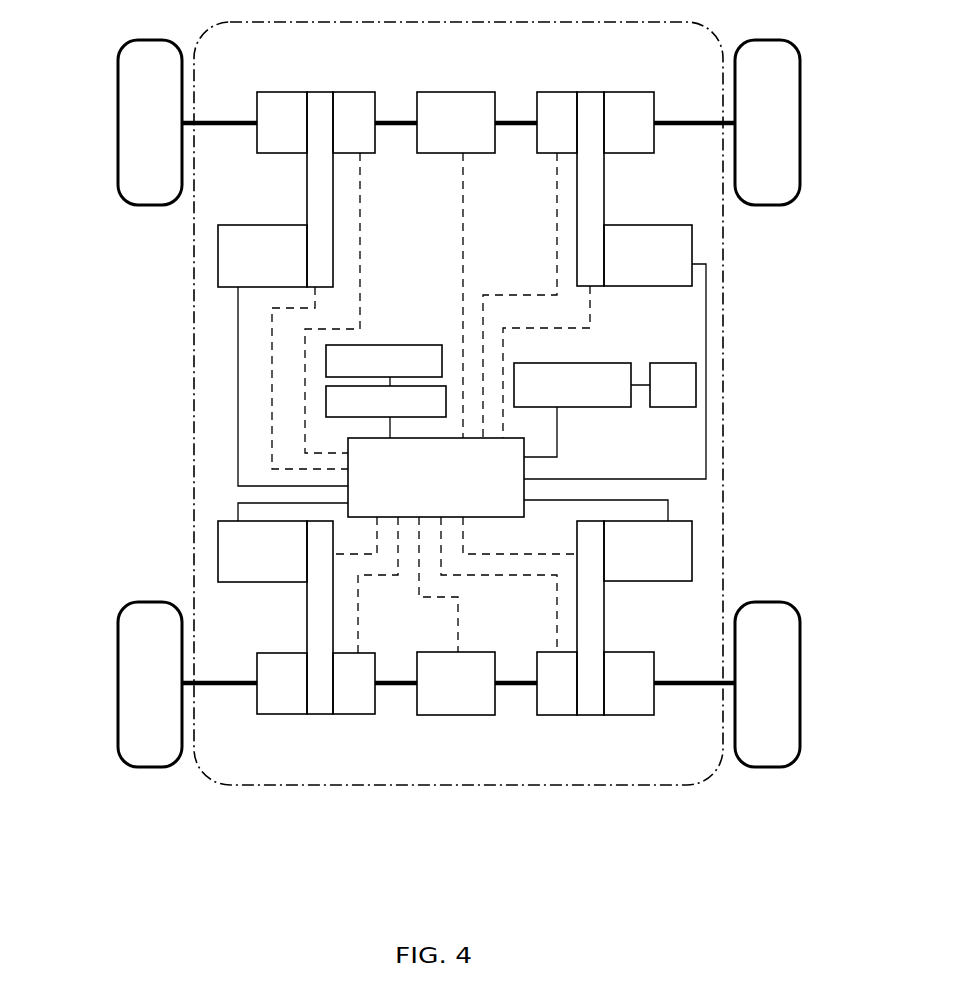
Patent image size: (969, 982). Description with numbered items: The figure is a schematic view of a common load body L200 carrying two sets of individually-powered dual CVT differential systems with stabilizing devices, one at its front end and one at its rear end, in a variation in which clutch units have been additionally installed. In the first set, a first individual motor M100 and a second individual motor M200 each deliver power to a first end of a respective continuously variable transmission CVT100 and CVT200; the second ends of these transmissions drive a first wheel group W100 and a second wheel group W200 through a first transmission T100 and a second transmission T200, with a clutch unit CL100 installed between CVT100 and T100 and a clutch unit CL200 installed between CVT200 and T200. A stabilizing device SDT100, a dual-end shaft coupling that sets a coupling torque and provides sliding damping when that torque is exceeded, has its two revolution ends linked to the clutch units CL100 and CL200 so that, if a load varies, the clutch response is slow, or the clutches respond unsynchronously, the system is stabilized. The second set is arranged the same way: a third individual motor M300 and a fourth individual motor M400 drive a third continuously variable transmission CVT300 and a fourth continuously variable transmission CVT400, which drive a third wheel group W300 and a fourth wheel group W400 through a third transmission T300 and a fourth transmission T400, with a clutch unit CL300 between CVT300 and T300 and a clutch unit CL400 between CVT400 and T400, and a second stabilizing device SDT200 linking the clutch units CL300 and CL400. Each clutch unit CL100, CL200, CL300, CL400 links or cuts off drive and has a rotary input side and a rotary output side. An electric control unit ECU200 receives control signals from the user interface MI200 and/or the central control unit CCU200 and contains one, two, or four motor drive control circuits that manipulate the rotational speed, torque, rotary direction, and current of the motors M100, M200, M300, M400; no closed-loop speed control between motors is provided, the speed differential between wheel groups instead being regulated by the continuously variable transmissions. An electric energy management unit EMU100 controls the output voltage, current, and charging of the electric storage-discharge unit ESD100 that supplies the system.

The common load body L200 is at (194, 413).
The first wheel group W100 is at (135, 707).
The second wheel group W200 is at (777, 707).
The third wheel group W300 is at (133, 101).
The fourth wheel group W400 is at (778, 98).
The first transmission T100 is at (272, 706).
The second transmission T200 is at (638, 705).
The third transmission T300 is at (272, 102).
The fourth transmission T400 is at (638, 100).
The clutch unit CL100 is at (350, 695).
The clutch unit CL200 is at (563, 695).
The clutch unit CL300 is at (350, 112).
The clutch unit CL400 is at (563, 108).
The first continuously variable transmission CVT100 is at (315, 645).
The second continuously variable transmission CVT200 is at (597, 642).
The third continuously variable transmission CVT300 is at (315, 163).
The fourth continuously variable transmission CVT400 is at (597, 163).
The first individual motor M100 is at (283, 542).
The second individual motor M200 is at (608, 540).
The third individual motor M300 is at (283, 355).
The fourth individual motor M400 is at (615, 352).
The stabilizing device SDT100 is at (442, 696).
The stabilizing device SDT200 is at (442, 110).
The electric storage-discharge unit ESD100 is at (384, 365).
The electric energy management unit EMU100 is at (386, 412).
The electric control unit ECU200 is at (436, 477).
The central control unit CCU200 is at (582, 410).
The user interface MI200 is at (680, 397).